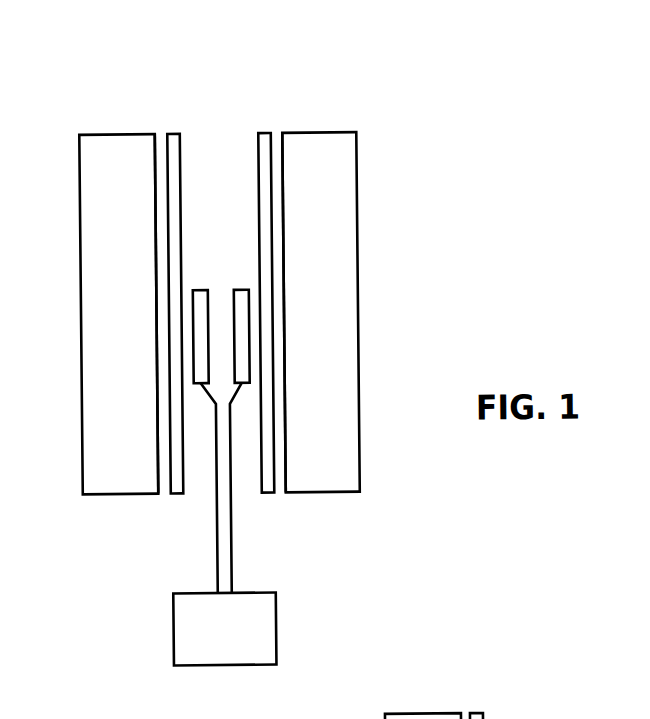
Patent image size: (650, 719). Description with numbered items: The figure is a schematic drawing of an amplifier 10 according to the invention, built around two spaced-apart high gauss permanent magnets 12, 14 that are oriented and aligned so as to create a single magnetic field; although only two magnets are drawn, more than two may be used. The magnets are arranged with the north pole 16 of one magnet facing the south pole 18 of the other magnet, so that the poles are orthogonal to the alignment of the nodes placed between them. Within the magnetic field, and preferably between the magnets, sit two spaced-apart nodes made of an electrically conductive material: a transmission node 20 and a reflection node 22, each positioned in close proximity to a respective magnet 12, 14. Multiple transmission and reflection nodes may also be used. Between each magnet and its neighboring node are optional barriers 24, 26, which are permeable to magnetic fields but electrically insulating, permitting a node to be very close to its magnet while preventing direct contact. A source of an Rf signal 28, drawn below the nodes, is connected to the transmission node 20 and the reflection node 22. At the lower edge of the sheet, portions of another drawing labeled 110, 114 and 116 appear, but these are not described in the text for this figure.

The electromagnetic flow sensor 10 is at (223, 94).
The permanent magnet 12 is at (121, 493).
The permanent magnet 14 is at (318, 493).
The north pole 16 is at (156, 220).
The south pole 18 is at (284, 219).
The transmission node 20 is at (198, 290).
The reflection node 22 is at (241, 290).
The barrier 24 is at (175, 132).
The barrier 26 is at (265, 132).
The source of an Rf signal 28 is at (224, 666).
The element 110 is at (473, 714).
The element 114 is at (547, 718).
The element 116 is at (623, 709).